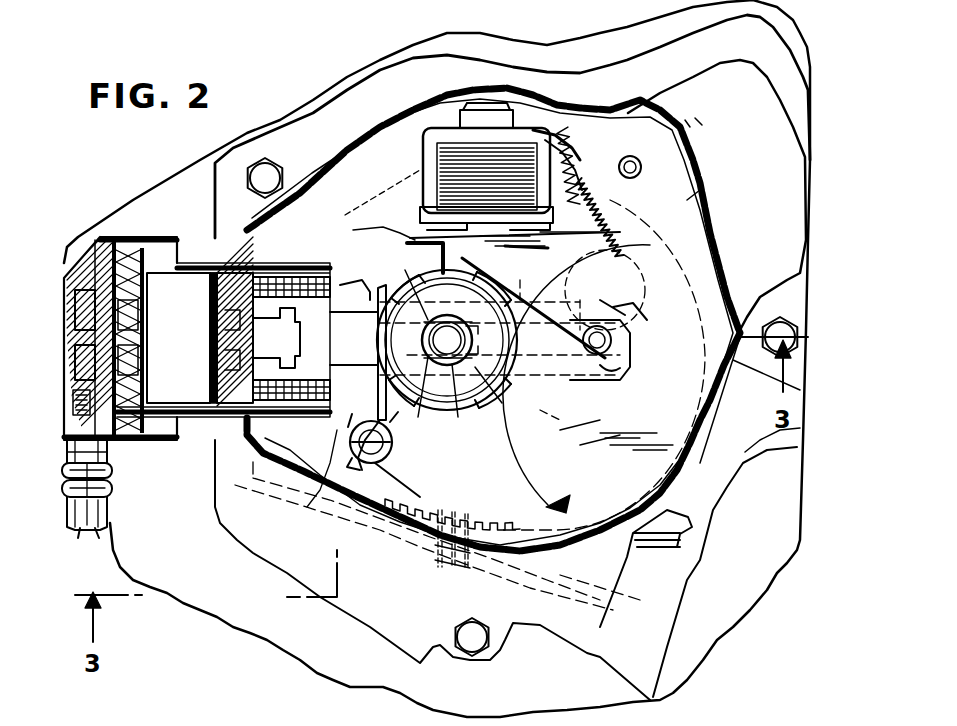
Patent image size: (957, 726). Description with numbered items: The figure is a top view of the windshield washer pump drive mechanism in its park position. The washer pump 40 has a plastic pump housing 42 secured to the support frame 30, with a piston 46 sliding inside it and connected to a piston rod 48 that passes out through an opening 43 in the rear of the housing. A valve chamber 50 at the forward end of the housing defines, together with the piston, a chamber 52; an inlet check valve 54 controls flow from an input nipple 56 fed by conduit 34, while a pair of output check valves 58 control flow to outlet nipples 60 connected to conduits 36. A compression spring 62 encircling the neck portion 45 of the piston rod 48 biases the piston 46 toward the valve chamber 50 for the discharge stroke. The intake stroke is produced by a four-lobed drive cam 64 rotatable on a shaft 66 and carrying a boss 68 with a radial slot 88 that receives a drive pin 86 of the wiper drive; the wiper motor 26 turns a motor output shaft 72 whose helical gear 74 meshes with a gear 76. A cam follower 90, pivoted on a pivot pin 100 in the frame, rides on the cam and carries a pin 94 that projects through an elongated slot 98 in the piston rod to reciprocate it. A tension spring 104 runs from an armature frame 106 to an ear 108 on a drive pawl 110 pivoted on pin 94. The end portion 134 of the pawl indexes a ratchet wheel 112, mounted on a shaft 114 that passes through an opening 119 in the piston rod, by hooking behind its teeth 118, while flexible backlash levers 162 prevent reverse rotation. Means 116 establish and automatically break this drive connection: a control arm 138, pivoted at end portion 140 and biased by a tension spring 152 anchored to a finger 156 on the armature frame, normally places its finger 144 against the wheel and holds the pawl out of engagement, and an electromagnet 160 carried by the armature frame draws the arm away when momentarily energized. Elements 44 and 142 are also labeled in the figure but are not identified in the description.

The wiper motor 26 is at (665, 622).
The support frame 30 is at (312, 112).
The conduit 34 is at (110, 516).
The conduits 36 is at (83, 518).
The washer pump 40 is at (157, 236).
The pump housing 42 is at (208, 250).
The opening 43 is at (366, 296).
The cover 44 is at (370, 125).
The neck portion 45 is at (380, 310).
The piston member 46 is at (213, 362).
The piston rod 48 is at (300, 283).
The valve chamber 50 is at (110, 237).
The chamber 52 is at (188, 337).
The inlet check valve 54 is at (127, 287).
The input nipple 56 is at (110, 462).
The output check valves 58 is at (133, 347).
The outlet nipples 60 is at (108, 450).
The compression spring 62 is at (340, 422).
The multi-lobed drive cam 64 is at (517, 432).
The shaft 66 is at (530, 405).
The boss 68 is at (633, 280).
The motor output shaft 72 is at (540, 583).
The helical gear 74 is at (453, 552).
The gear 76 is at (670, 440).
The drive pin 86 is at (543, 257).
The slot 88 is at (580, 253).
The cam follower 90 is at (700, 190).
The pin 94 is at (620, 367).
The elongated slot 98 is at (600, 410).
The pivot pin 100 is at (685, 122).
The tension spring 104 is at (696, 119).
The armature frame 106 is at (542, 140).
The ear 108 is at (620, 313).
The drive pawl 110 is at (627, 340).
The ratchet wheel 112 is at (430, 415).
The shaft 114 is at (467, 423).
The drive connection means 116 is at (452, 145).
The teeth 118 is at (367, 267).
The opening 119 is at (447, 322).
The end portion 134 is at (364, 226).
The control arm 138 is at (437, 163).
The end portion 140 is at (634, 157).
The base plate 142 is at (400, 218).
The finger 144 is at (375, 192).
The tension spring 152 is at (572, 128).
The finger 156 is at (610, 103).
The electromagnet 160 is at (530, 147).
The backlash levers 162 is at (297, 480).